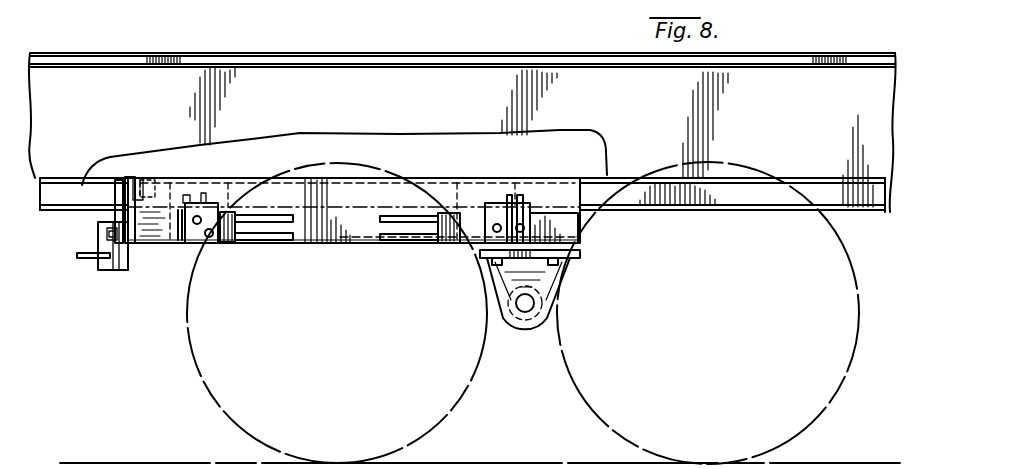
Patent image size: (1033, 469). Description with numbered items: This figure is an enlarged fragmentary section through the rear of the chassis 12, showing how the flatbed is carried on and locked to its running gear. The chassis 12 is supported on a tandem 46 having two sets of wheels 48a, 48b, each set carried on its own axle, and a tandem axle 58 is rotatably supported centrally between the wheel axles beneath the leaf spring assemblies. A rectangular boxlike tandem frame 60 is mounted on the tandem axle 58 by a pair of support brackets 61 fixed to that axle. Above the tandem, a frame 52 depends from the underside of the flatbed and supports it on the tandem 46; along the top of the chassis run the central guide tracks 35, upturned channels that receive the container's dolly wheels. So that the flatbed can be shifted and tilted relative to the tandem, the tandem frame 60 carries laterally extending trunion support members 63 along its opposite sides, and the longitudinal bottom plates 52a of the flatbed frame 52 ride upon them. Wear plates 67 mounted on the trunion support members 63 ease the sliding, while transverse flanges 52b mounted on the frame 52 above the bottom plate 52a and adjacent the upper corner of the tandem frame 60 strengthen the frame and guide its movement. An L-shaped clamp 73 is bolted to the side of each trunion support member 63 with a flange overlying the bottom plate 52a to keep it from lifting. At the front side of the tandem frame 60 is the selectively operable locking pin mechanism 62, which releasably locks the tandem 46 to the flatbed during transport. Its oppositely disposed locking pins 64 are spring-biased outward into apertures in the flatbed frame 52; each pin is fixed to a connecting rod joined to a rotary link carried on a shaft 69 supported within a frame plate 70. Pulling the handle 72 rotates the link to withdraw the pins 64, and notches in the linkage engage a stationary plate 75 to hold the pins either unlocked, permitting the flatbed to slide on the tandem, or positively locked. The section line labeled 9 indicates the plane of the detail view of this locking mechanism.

The section line 9- 9 is at (90, 285).
The chassis 12 is at (860, 226).
The central guide tracks 35 is at (215, 53).
The tandem 46 is at (586, 263).
The tandem wheels 48a is at (205, 387).
The tandem wheels 48b is at (841, 390).
The frame 52 is at (570, 83).
The bottom plates 52a is at (735, 212).
The transverse flanges 52b is at (722, 178).
The tandem axle 58 is at (534, 303).
The tandem frame 60 is at (582, 232).
The support brackets 61 is at (505, 290).
The locking pin mechanism 62 is at (86, 228).
The trunion support members 63 is at (232, 228).
The locking pins 64 is at (148, 192).
The wear plates 67 is at (204, 187).
The shaft 69 is at (122, 178).
The frame plate 70 is at (128, 232).
The handle 72 is at (80, 254).
The L-shaped clamp 73 is at (198, 250).
The stationary plate 75 is at (122, 270).